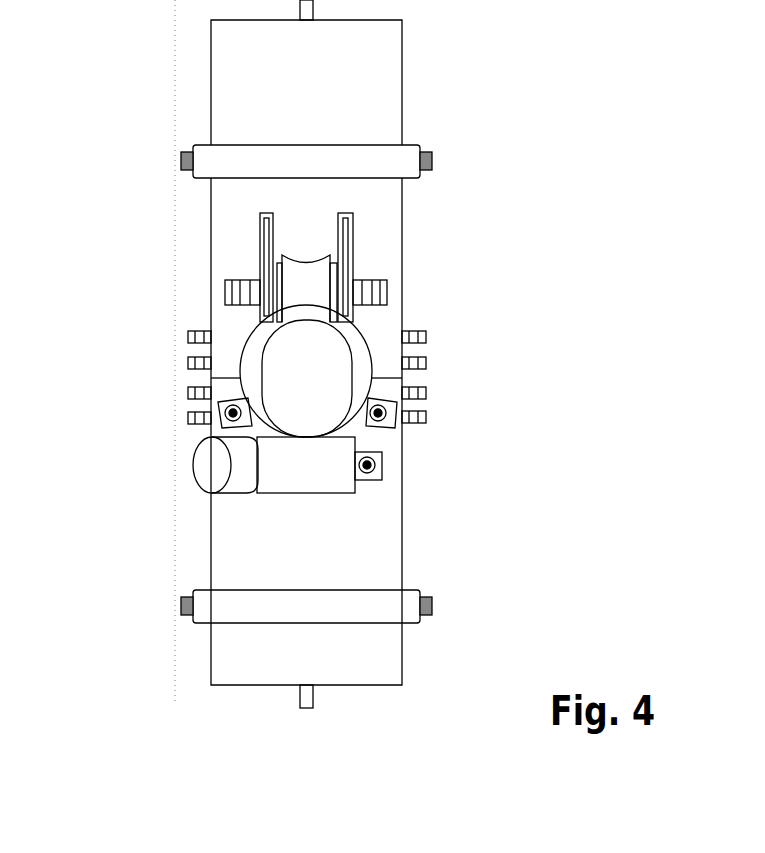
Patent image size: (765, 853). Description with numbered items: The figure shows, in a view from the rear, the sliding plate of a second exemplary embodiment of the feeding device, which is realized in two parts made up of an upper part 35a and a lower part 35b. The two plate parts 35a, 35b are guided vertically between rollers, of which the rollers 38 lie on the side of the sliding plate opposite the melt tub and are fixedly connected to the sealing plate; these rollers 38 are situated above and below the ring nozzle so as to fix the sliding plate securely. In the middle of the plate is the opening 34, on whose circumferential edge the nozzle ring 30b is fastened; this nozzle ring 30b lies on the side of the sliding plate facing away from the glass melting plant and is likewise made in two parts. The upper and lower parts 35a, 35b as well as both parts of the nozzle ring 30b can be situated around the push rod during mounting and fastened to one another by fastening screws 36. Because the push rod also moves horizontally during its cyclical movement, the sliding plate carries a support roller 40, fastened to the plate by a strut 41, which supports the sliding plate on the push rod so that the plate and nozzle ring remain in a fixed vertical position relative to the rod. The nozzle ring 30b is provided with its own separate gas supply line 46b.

The upper part of the sliding plate 35a is at (382, 83).
The lower part of the sliding plate 35b is at (368, 520).
The rollers 38 is at (408, 153).
The strut 41 is at (350, 227).
The support roller 40 is at (315, 273).
The nozzle ring 30b is at (357, 345).
The opening 34 is at (280, 355).
The fastening screws 36 is at (183, 332).
The gas supply line 46b is at (207, 463).